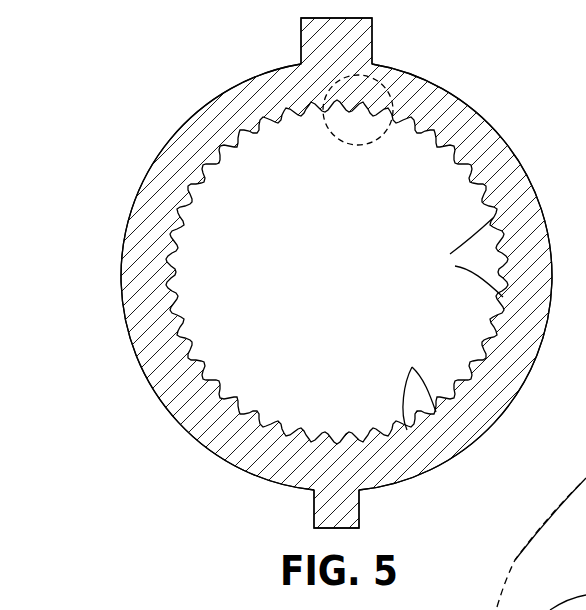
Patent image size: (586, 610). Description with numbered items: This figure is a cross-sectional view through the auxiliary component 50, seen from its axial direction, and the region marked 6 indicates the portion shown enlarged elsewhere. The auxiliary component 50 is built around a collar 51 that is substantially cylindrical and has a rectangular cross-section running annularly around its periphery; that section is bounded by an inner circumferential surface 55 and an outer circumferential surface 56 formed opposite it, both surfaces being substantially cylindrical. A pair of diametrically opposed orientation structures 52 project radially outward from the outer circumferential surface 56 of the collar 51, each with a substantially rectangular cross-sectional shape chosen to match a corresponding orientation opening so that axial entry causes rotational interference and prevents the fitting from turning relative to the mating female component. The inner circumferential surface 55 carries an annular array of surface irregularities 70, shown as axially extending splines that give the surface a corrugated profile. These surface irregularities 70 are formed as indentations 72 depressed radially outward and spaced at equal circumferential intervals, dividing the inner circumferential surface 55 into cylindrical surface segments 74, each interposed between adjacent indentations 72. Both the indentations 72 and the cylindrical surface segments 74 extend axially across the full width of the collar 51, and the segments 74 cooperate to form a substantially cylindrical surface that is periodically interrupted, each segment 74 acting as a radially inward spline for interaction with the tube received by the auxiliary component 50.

The auxiliary component 50 is at (183, 448).
The collar 51 is at (132, 372).
The orientation structure 52 is at (375, 22).
The inner circumferential surface 55 is at (185, 326).
The outer circumferential surface 56 is at (126, 326).
The detail region of FIG. 6 is at (342, 145).
The surface irregularities 70 is at (340, 422).
The indentation 72 is at (466, 378).
The cylindrical surface segment 74 is at (501, 258).